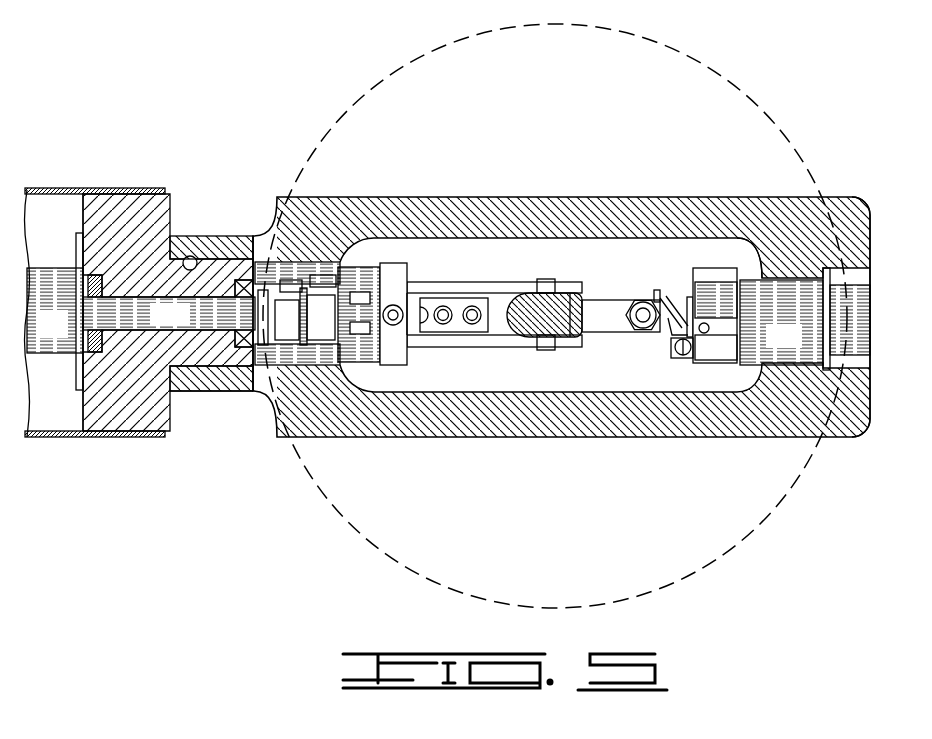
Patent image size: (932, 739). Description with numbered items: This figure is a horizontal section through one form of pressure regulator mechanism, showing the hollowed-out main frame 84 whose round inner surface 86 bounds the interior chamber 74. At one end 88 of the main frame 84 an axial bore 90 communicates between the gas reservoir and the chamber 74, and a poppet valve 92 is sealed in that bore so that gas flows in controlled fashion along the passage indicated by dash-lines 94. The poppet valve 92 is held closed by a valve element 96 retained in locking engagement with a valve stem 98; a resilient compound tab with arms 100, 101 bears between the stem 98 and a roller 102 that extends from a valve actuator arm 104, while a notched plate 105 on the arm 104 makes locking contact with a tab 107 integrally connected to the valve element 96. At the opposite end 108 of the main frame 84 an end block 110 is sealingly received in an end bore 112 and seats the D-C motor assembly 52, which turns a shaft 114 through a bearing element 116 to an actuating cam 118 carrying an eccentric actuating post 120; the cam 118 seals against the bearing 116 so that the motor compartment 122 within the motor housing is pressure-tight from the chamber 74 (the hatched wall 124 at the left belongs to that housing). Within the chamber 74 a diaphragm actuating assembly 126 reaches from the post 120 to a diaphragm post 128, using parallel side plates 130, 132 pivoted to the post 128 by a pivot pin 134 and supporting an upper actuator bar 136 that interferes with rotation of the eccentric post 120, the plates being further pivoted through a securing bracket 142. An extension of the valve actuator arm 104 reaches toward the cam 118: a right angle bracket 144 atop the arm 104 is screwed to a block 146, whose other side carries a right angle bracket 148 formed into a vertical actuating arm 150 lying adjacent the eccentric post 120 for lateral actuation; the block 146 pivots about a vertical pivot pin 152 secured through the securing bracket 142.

The D-C motor assembly 52 is at (64, 335).
The chamber 74 is at (645, 266).
The main frame 84 is at (200, 236).
The round inner surface 86 is at (737, 243).
The end 88 is at (858, 237).
The axial bore 90 is at (827, 288).
The poppet valve 92 is at (795, 347).
The passage 94 is at (850, 310).
The valve element 96 is at (690, 297).
The valve stem 98 is at (690, 312).
The arm 100 is at (670, 300).
The arm 101 is at (660, 297).
The roller 102 is at (642, 300).
The valve actuator arm 104 is at (612, 333).
The notched plate 105 is at (661, 322).
The tab 107 is at (672, 333).
The opposite end 108 is at (199, 374).
The end block 110 is at (117, 203).
The end bore 112 is at (188, 256).
The shaft 114 is at (186, 326).
The bearing element 116 is at (240, 393).
The actuating cam 118 is at (256, 302).
The eccentric actuating post 120 is at (262, 300).
The motor compartment 122 is at (70, 228).
The wall liner 124 is at (56, 190).
The diaphragm actuating assembly 126 is at (428, 270).
The diaphragm post 128 is at (556, 310).
The side plate 130 is at (342, 275).
The side plate 132 is at (512, 347).
The pivot pin 134 is at (543, 279).
The upper actuator bar 136 is at (305, 355).
The securing bracket 142 is at (376, 285).
The right angle bracket 144 is at (455, 332).
The block 146 is at (410, 347).
The right angle bracket 148 is at (298, 345).
The vertical actuating arm 150 is at (266, 350).
The vertical pivot pin 152 is at (386, 326).